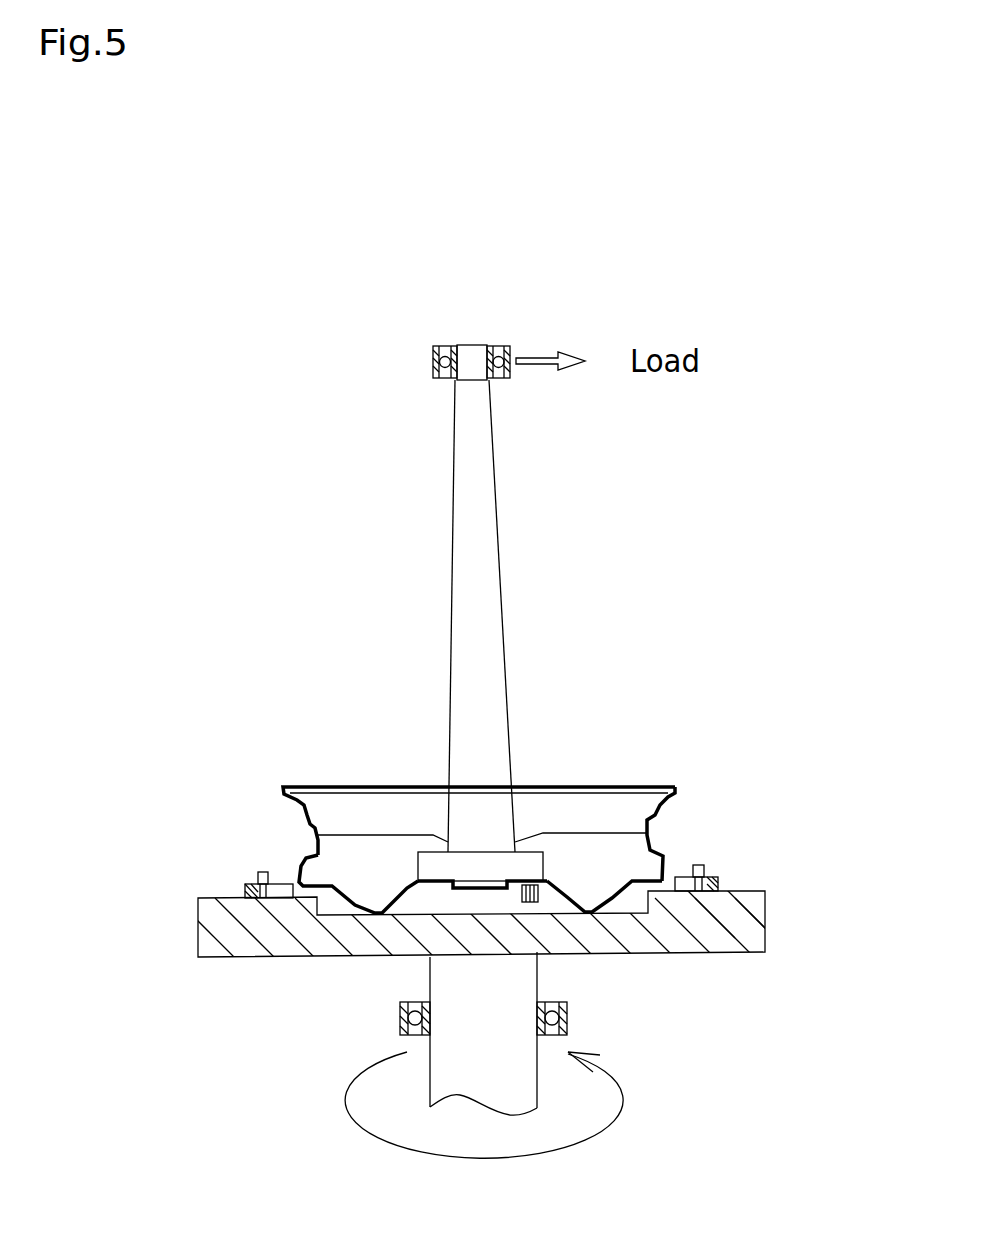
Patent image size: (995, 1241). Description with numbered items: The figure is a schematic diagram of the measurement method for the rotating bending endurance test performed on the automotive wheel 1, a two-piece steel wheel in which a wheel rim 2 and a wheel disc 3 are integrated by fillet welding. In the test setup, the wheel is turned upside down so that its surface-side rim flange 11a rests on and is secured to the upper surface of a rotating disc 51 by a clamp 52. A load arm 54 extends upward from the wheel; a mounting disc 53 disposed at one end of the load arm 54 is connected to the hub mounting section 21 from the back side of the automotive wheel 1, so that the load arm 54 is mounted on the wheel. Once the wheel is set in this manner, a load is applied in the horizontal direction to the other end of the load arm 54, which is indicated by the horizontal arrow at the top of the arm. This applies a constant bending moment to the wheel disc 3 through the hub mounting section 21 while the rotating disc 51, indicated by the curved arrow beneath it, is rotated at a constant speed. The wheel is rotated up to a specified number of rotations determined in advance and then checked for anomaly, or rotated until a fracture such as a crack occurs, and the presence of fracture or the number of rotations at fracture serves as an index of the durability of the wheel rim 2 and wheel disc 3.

The automotive wheel 1 is at (624, 789).
The wheel rim 2 is at (667, 810).
The wheel disc 3 is at (407, 887).
The surface-side rim flange 11a is at (675, 885).
The hub mounting section 21 is at (418, 882).
The rotating disc 51 is at (277, 940).
The clamp 52 is at (255, 885).
The mounting disc 53 is at (523, 865).
The load arm 54 is at (459, 549).